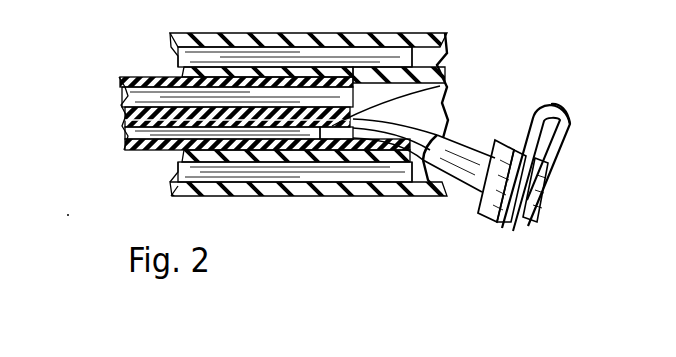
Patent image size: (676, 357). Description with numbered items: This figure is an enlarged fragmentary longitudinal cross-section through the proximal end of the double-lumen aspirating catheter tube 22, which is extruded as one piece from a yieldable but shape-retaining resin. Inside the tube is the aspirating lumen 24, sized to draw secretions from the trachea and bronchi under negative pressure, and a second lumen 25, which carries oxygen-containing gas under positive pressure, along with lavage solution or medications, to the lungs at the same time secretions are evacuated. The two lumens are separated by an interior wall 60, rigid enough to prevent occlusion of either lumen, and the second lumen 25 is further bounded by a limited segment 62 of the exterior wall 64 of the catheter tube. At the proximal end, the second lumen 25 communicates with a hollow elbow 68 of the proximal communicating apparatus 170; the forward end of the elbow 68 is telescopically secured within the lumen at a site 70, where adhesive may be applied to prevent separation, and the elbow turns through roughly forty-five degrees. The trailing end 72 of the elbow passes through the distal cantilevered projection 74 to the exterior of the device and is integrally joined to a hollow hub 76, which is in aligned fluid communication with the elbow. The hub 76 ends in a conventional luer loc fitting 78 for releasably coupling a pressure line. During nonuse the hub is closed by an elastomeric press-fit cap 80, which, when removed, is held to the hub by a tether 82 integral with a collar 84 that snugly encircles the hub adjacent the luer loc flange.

The aspirating catheter tube 22 is at (134, 72).
The aspirating lumen 24 is at (127, 97).
The second lumen 25 is at (125, 134).
The interior wall 60 is at (152, 110).
The limited segment of the exterior wall 62 is at (150, 148).
The exterior wall 64 is at (157, 77).
The hollow elbow 68 is at (442, 113).
The site 70 is at (440, 86).
The trailing end 72 is at (443, 200).
The distal cantilevered projection 74 is at (408, 63).
The hub 76 is at (491, 138).
The luer loc fitting 78 is at (512, 200).
The elastomeric press-fit cap 80 is at (532, 213).
The tether 82 is at (567, 143).
The collar 84 is at (480, 200).
The proximal communicating apparatus 170 is at (572, 107).